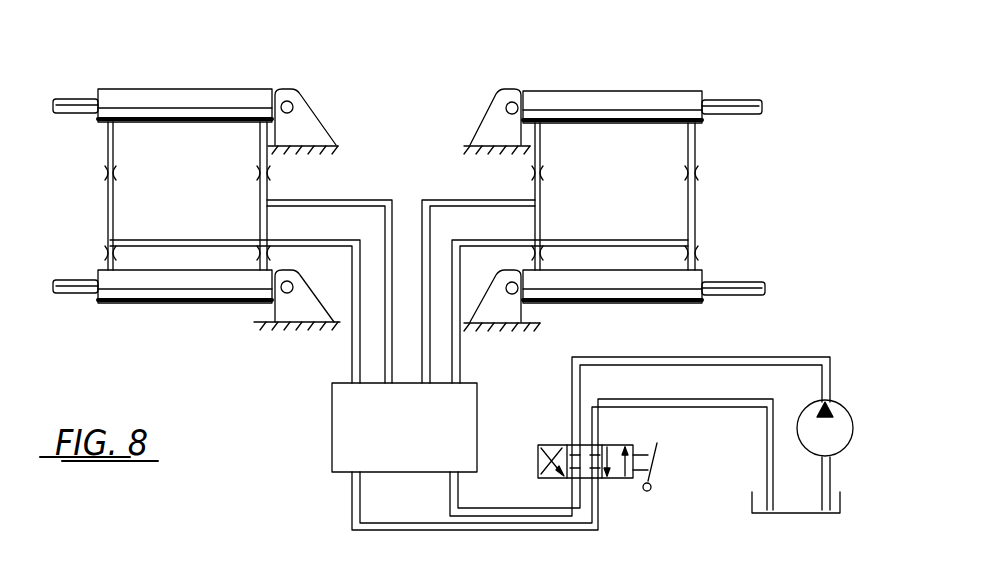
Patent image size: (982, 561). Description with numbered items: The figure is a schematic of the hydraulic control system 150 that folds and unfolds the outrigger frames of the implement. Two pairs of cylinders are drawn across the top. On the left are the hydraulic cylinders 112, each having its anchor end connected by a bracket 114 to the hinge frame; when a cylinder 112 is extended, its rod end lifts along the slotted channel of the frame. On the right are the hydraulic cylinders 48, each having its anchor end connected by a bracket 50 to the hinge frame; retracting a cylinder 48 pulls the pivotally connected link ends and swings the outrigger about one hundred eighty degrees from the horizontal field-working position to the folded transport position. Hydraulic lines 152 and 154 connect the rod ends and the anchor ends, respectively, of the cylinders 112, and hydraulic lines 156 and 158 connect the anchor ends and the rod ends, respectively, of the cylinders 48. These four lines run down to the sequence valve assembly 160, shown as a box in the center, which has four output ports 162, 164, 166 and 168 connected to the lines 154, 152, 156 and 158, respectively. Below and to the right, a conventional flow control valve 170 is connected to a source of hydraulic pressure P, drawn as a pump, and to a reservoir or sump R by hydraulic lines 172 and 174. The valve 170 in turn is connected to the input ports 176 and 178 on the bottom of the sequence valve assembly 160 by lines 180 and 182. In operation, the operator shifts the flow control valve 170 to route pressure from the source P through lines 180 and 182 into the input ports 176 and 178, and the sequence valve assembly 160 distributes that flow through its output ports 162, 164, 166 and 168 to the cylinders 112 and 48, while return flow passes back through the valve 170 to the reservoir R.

The hydraulic cylinder 48 is at (622, 74).
The bracket 50 is at (495, 125).
The hydraulic cylinder 112 is at (187, 93).
The bracket 114 is at (305, 125).
The hydraulic control system 150 is at (180, 355).
The hydraulic line 152 is at (107, 213).
The hydraulic line 154 is at (260, 194).
The hydraulic line 156 is at (541, 190).
The hydraulic line 158 is at (696, 214).
The sequence valve assembly 160 is at (332, 429).
The output port 162 is at (385, 343).
The output port 164 is at (352, 361).
The output port 166 is at (428, 348).
The output port 168 is at (458, 362).
The flow control valve 170 is at (558, 445).
The hydraulic line 172 is at (715, 357).
The hydraulic line 174 is at (683, 408).
The input port 176 is at (352, 494).
The input port 178 is at (450, 490).
The hydraulic line 180 is at (522, 476).
The hydraulic line 182 is at (521, 532).
The source of hydraulic pressure P is at (845, 410).
The reservoir R is at (752, 505).